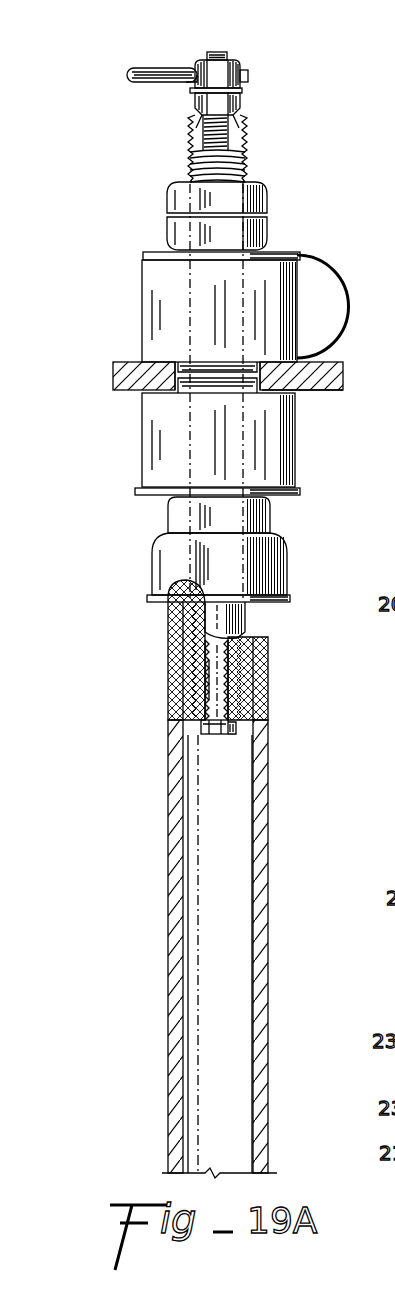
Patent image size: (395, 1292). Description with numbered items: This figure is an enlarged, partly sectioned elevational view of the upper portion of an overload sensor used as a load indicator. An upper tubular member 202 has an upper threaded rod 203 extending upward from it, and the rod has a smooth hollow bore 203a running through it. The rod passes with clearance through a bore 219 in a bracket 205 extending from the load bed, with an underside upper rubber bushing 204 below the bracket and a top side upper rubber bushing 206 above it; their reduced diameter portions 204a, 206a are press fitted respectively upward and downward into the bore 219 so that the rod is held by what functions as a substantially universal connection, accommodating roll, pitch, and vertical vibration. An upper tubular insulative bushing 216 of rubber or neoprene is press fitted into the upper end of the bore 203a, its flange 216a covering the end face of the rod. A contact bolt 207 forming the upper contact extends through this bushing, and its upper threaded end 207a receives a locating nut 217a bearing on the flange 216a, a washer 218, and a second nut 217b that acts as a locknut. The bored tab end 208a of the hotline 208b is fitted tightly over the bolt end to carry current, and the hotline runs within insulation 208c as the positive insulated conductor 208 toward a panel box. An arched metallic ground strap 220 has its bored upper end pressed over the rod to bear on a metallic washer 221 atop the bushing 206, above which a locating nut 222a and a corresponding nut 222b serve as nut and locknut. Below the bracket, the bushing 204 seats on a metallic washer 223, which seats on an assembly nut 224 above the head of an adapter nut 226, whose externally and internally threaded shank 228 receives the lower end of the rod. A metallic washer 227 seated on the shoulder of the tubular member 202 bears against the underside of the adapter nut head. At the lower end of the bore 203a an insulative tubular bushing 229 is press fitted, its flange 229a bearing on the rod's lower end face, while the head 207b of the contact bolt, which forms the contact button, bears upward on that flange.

The upper tubular member 202 is at (168, 898).
The upper threaded rod 203 is at (189, 165).
The smooth hollow bore 203a is at (213, 654).
The underside upper rubber bushing 204 is at (142, 469).
The reduced diameter portion 204a is at (233, 391).
The bracket 205 is at (343, 390).
The top side upper rubber bushing 206 is at (142, 322).
The reduced diameter portion 206a is at (212, 361).
The upper contact 207 is at (242, 638).
The upper threaded end 207a is at (212, 54).
The head 207b is at (224, 735).
The positive insulated conductor 208 is at (124, 77).
The bored tab end 208a is at (244, 74).
The hotline 208b is at (182, 57).
The insulation 208c is at (170, 84).
The upper tubular insulative bushing 216 is at (247, 143).
The flange 216a is at (243, 117).
The locating nut 217a is at (196, 104).
The second nut 217b is at (242, 91).
The washer 218 is at (242, 96).
The bore 219 is at (303, 392).
The metallic ground strap 220 is at (347, 318).
The metallic washer 221 is at (143, 257).
The locating nut 222a is at (267, 231).
The corresponding nut 222b is at (267, 207).
The metallic washer 223 is at (300, 491).
The assembly nut 224 is at (168, 512).
The adapter nut 226 is at (287, 576).
The metallic washer 227 is at (147, 600).
The externally and internally threaded shank 228 is at (262, 650).
The insulative tubular bushing 229 is at (182, 696).
The flange 229a is at (238, 728).